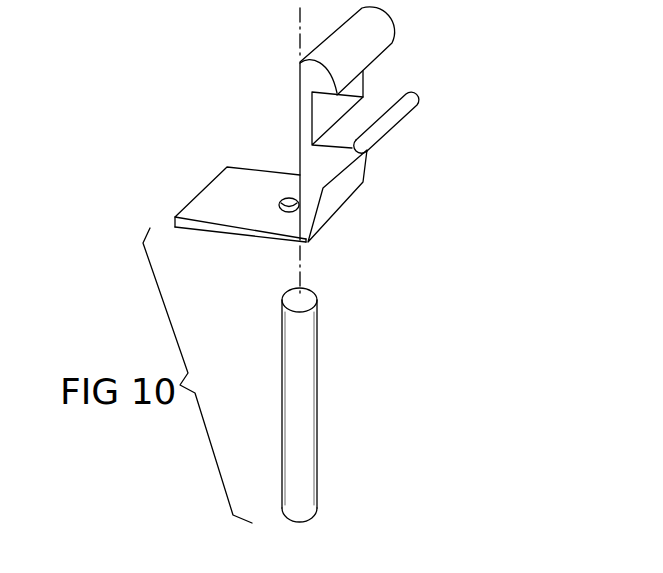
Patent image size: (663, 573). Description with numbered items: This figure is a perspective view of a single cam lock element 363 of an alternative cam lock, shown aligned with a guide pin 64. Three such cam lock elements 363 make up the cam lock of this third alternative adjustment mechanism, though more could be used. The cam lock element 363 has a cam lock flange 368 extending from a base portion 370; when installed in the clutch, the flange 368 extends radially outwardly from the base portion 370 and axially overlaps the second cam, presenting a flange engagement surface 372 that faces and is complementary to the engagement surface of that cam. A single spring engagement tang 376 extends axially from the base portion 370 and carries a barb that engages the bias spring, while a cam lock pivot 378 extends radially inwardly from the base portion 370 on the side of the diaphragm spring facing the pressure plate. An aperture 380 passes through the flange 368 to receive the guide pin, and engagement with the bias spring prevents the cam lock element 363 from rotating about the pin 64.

The pin 64 is at (318, 390).
The cam lock element 363 is at (464, 107).
The cam lock flange 368 is at (239, 186).
The base portion 370 is at (363, 181).
The flange engagement surface 372 is at (243, 183).
The spring engagement tang 376 is at (363, 80).
The cam lock pivot 378 is at (411, 116).
The aperture 380 is at (287, 198).